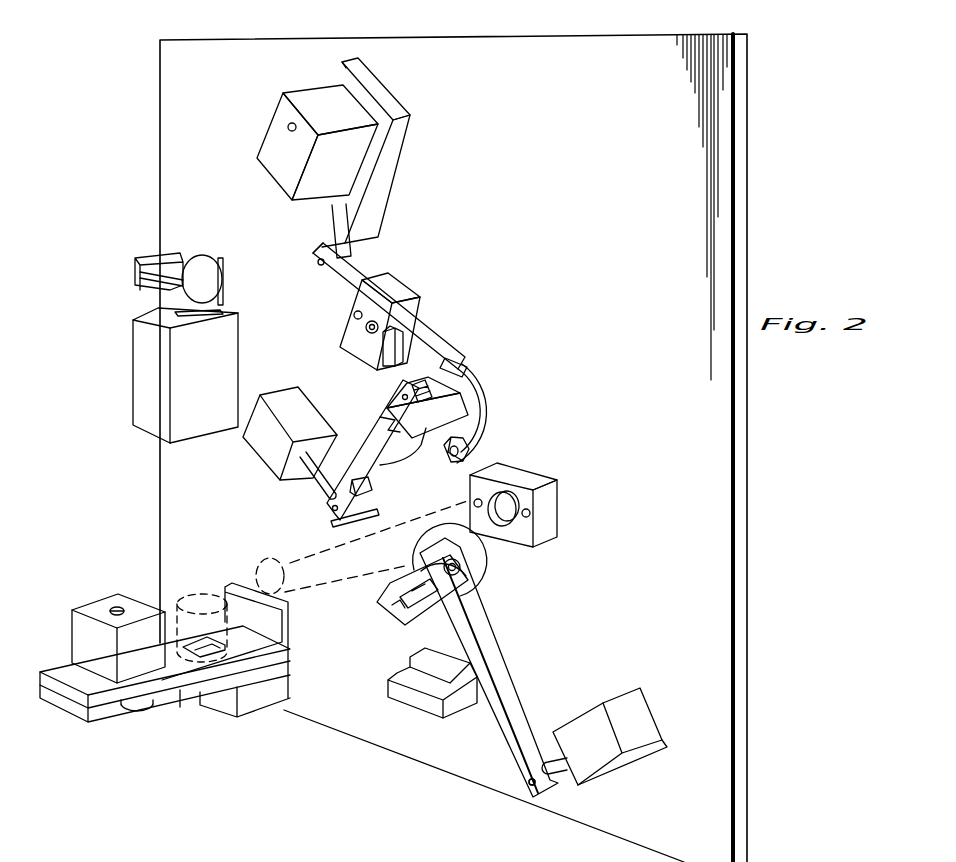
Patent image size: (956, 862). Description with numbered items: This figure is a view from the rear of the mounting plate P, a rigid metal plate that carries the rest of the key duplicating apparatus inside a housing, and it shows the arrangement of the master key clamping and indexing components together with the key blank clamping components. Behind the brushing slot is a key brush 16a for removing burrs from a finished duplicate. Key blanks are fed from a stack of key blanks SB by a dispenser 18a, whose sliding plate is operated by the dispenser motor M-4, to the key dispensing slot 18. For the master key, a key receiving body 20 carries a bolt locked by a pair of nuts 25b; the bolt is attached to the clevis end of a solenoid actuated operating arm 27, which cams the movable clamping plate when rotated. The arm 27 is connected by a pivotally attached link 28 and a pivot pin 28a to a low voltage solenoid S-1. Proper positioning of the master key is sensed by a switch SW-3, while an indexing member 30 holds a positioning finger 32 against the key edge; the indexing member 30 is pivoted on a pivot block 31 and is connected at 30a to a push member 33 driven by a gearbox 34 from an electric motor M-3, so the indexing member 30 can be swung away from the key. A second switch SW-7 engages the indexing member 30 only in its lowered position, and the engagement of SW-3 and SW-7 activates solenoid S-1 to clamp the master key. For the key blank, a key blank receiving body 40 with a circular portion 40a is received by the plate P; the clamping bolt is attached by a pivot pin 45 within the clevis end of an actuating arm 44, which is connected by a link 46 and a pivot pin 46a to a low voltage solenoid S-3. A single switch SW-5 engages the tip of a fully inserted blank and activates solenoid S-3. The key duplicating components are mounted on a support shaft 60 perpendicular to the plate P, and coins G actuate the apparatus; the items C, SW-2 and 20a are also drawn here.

The mounting plate P is at (598, 213).
The electric motor M-3 is at (337, 177).
The gearbox 34 is at (405, 124).
The push member 33 is at (352, 253).
The indexing member 30 is at (433, 327).
The pivotal connection 30a is at (313, 260).
The pivot block 31 is at (355, 323).
The second switch SW-7 is at (388, 362).
The key receiving body 20 is at (408, 450).
The cam disc rim 20a is at (477, 385).
The positioning finger 32 is at (460, 408).
The nuts 25b is at (470, 457).
The switch SW-3 is at (375, 415).
The solenoid actuated operating arm 27 is at (373, 470).
The pivot pin 28a is at (330, 515).
The low voltage solenoid S-1 is at (300, 429).
The link 28 is at (305, 488).
The key blank receiving body 40 is at (375, 600).
The support shaft 60 is at (295, 572).
The pivot pin 45 is at (418, 545).
The circular portion 40a is at (488, 567).
The actuating arm 44 is at (488, 642).
The single switch SW-5 is at (397, 618).
The low voltage solenoid S-3 is at (598, 741).
The link 46 is at (555, 774).
The pivot pin 46a is at (527, 783).
The key brush 16a is at (423, 700).
The key dispensing slot 18 is at (263, 693).
The dispenser 18a is at (250, 640).
The dispenser motor M-4 is at (105, 605).
The stack of key blanks SB is at (198, 592).
The counter housing C is at (130, 330).
The switch SW-2 is at (148, 253).
The coins G is at (203, 253).